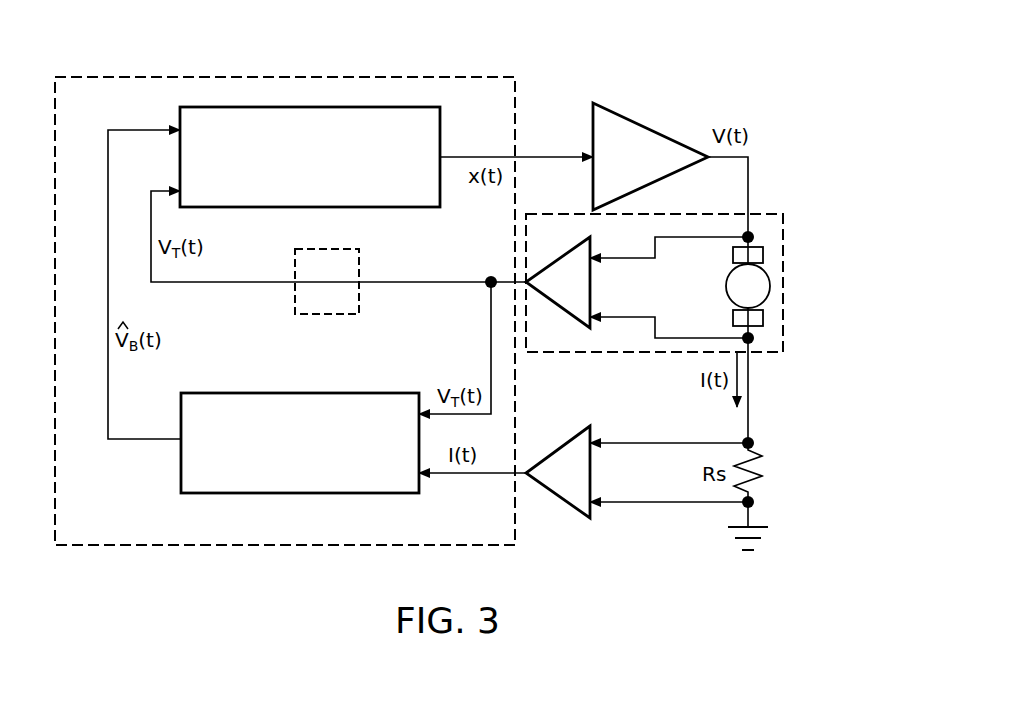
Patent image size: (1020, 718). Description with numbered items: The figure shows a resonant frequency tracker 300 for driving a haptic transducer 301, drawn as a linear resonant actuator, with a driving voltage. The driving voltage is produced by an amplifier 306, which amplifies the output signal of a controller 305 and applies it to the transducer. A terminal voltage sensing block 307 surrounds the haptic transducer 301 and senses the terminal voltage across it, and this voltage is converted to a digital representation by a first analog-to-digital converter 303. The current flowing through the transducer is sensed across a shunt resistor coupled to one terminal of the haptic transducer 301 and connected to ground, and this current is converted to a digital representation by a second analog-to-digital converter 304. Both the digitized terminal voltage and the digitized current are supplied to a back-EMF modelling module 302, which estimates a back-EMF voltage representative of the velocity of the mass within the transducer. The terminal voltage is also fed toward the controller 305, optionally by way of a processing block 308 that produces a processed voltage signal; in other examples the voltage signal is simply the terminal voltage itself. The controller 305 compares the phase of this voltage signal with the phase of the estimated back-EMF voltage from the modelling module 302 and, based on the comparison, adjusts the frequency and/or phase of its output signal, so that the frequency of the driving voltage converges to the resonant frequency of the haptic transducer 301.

The resonant frequency tracker 300 is at (440, 77).
The haptic transducer 301 is at (763, 258).
The back-EMF modelling module 302 is at (307, 493).
The first analog-to-digital converter 303 is at (540, 262).
The second analog-to-digital converter 304 is at (570, 440).
The controller 305 is at (257, 107).
The amplifier 306 is at (650, 130).
The terminal voltage sensing block 307 is at (783, 335).
The processing block 308 is at (359, 262).